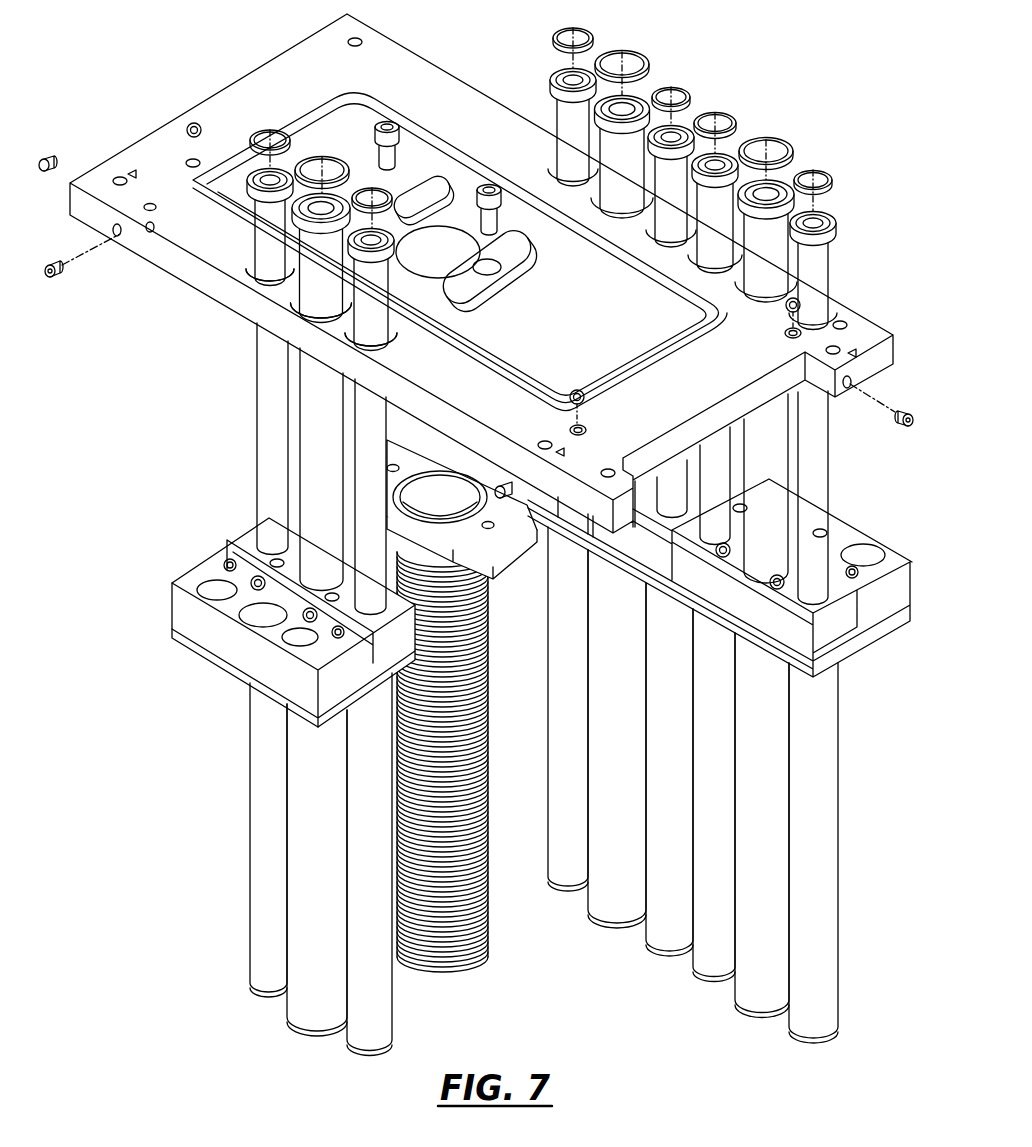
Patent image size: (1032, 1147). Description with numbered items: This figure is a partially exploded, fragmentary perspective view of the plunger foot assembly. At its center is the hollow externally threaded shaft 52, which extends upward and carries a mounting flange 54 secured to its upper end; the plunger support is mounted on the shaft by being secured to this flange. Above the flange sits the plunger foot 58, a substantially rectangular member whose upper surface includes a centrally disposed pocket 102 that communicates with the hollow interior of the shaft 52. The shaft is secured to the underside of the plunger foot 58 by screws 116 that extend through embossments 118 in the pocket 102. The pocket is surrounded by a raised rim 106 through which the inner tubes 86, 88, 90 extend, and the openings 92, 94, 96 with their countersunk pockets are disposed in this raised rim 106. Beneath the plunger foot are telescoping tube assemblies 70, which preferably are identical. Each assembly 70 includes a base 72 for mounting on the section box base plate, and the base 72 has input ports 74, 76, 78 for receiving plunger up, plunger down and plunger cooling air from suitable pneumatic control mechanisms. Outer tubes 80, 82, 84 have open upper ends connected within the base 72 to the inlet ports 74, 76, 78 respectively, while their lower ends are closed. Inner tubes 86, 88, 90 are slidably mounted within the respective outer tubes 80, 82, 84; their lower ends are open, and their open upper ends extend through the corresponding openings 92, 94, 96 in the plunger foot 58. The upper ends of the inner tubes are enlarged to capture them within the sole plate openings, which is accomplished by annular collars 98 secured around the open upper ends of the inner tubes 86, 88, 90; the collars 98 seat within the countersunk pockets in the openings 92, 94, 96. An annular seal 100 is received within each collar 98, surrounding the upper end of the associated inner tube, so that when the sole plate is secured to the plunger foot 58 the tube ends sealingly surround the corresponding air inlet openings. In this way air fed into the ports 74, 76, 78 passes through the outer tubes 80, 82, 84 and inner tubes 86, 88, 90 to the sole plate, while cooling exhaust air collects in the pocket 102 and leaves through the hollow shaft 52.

The plunger foot 58 is at (177, 108).
The annular seal 100 is at (315, 157).
The annular collar 98 is at (180, 238).
The pocket 102 is at (348, 120).
The screw 116 is at (387, 125).
The embossment 118 is at (422, 184).
The raised rim 106 is at (152, 228).
The opening 92 is at (249, 198).
The opening 94 is at (312, 306).
The opening 96 is at (365, 336).
The inner tube 86 is at (264, 443).
The inner tube 88 is at (320, 477).
The inner tube 90 is at (368, 512).
The base 72 is at (186, 608).
The input port 74 is at (212, 585).
The input port 76 is at (253, 608).
The input port 78 is at (297, 640).
The mounting flange 54 is at (512, 550).
The hollow externally threaded shaft 52 is at (482, 697).
The telescoping tube assembly 70 is at (532, 807).
The outer tube 80 is at (265, 776).
The outer tube 82 is at (308, 834).
The outer tube 84 is at (365, 900).